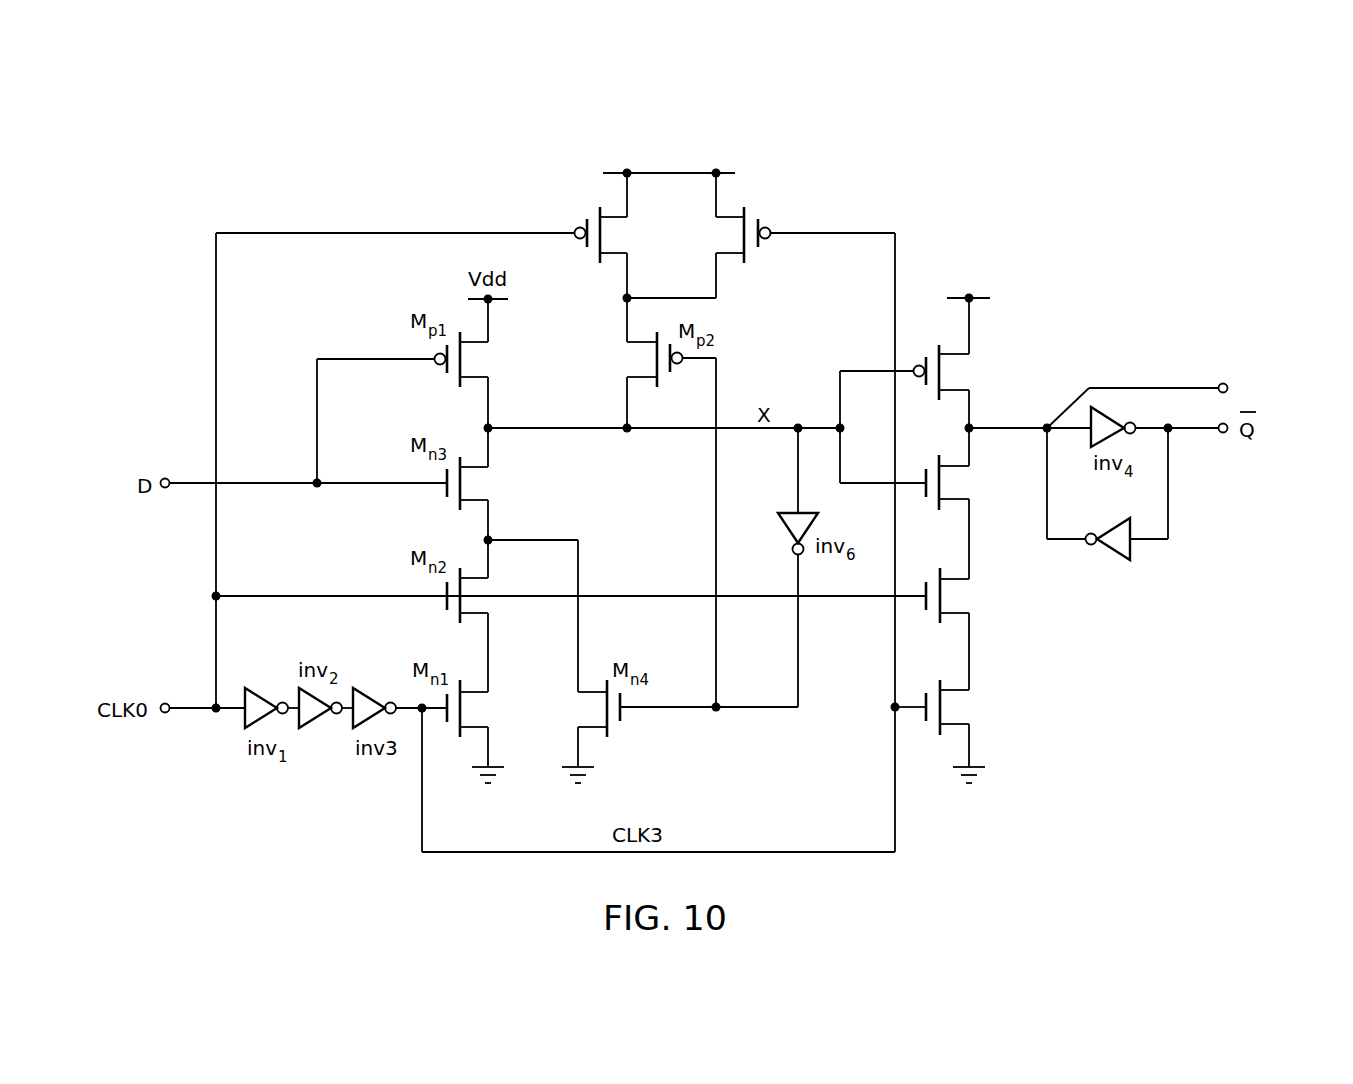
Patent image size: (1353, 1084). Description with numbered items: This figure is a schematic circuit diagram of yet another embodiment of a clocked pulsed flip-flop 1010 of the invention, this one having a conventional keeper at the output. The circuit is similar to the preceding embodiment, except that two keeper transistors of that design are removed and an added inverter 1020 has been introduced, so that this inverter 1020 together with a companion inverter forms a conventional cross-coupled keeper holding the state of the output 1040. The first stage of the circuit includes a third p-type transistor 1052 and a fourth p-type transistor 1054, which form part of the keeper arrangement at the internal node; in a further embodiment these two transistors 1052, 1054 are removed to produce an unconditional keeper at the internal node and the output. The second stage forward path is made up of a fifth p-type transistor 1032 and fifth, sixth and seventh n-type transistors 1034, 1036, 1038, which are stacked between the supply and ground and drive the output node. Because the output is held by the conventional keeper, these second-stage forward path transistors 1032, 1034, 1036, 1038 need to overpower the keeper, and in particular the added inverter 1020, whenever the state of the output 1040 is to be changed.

The pulsed flip-flop circuit 1010 is at (1110, 151).
The transistor Mp3 1052 is at (552, 175).
The transistor Mp4 1054 is at (780, 182).
The transistor Mp5 1032 is at (1005, 345).
The transistor Mn7 1038 is at (994, 494).
The transistor Mn6 1036 is at (1003, 610).
The transistor Mn5 1034 is at (1005, 718).
The output Q 1040 is at (1248, 373).
The inverter inv5 1020 is at (1110, 590).